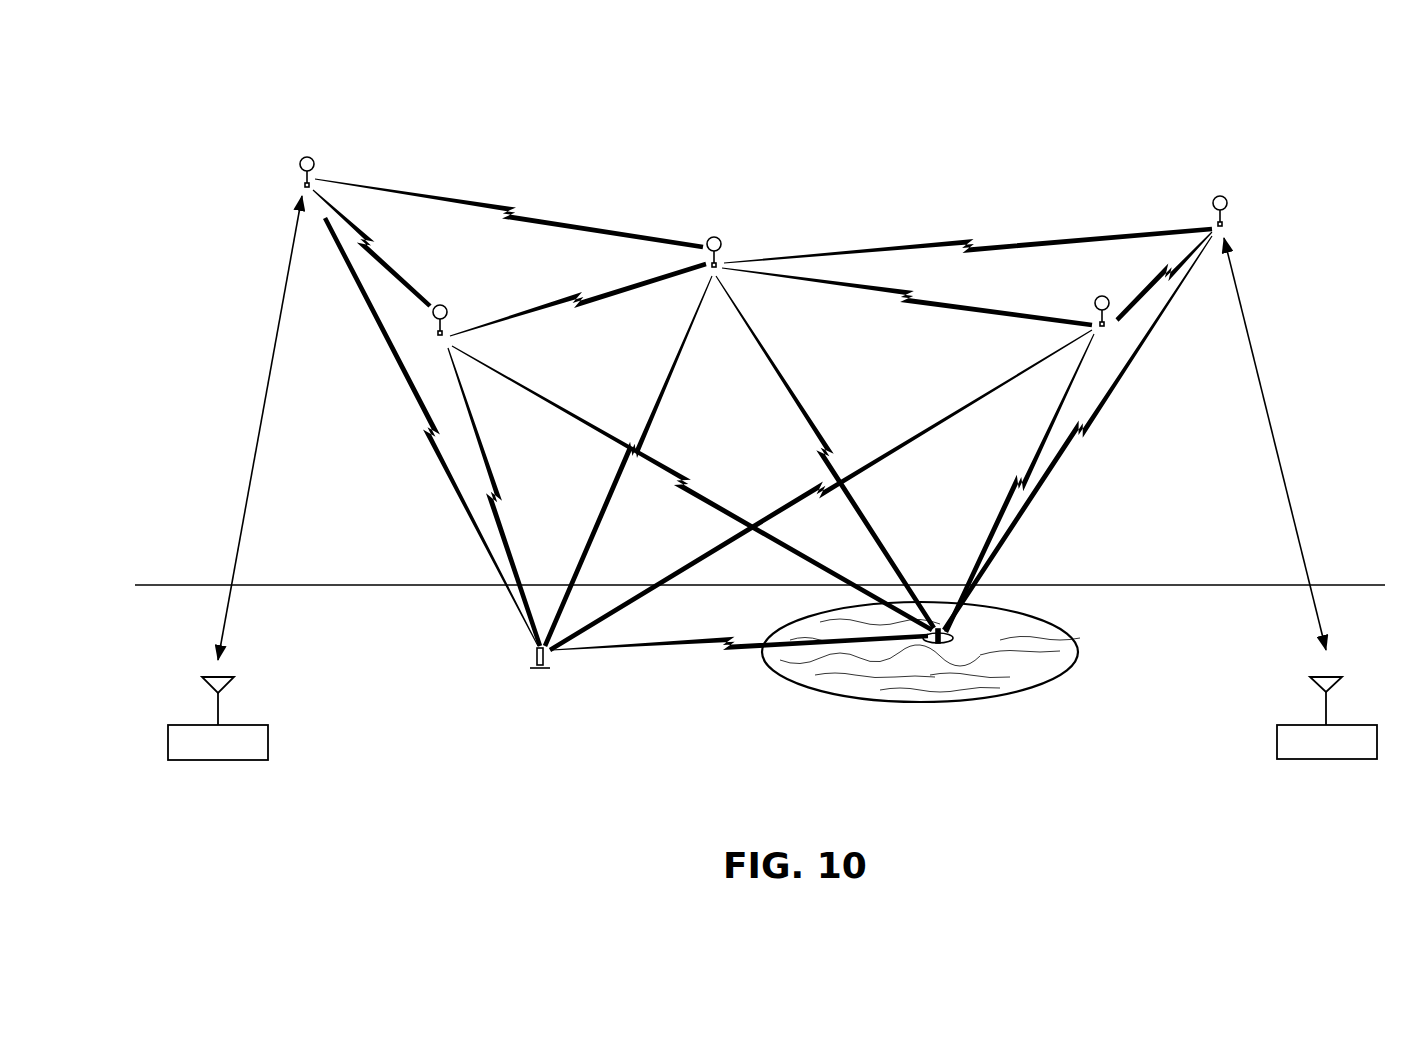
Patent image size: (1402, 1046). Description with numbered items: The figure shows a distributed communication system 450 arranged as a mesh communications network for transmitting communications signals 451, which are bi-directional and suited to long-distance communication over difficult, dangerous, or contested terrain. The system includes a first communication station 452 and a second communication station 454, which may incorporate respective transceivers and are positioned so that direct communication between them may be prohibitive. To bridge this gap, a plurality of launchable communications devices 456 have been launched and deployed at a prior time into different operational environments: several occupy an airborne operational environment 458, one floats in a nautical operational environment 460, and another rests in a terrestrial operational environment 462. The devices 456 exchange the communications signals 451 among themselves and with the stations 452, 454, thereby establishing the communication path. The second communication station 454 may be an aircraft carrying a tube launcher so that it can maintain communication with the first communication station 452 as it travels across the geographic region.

The distributed communication system 450 is at (218, 68).
The communications signals 451 is at (455, 196).
The first communication station 452 is at (245, 725).
The second communication station 454 is at (1297, 725).
The launchable communications devices 456 is at (292, 154).
The airborne operational environment 458 is at (832, 165).
The nautical operational environment 460 is at (888, 678).
The terrestrial operational environment 462 is at (450, 743).